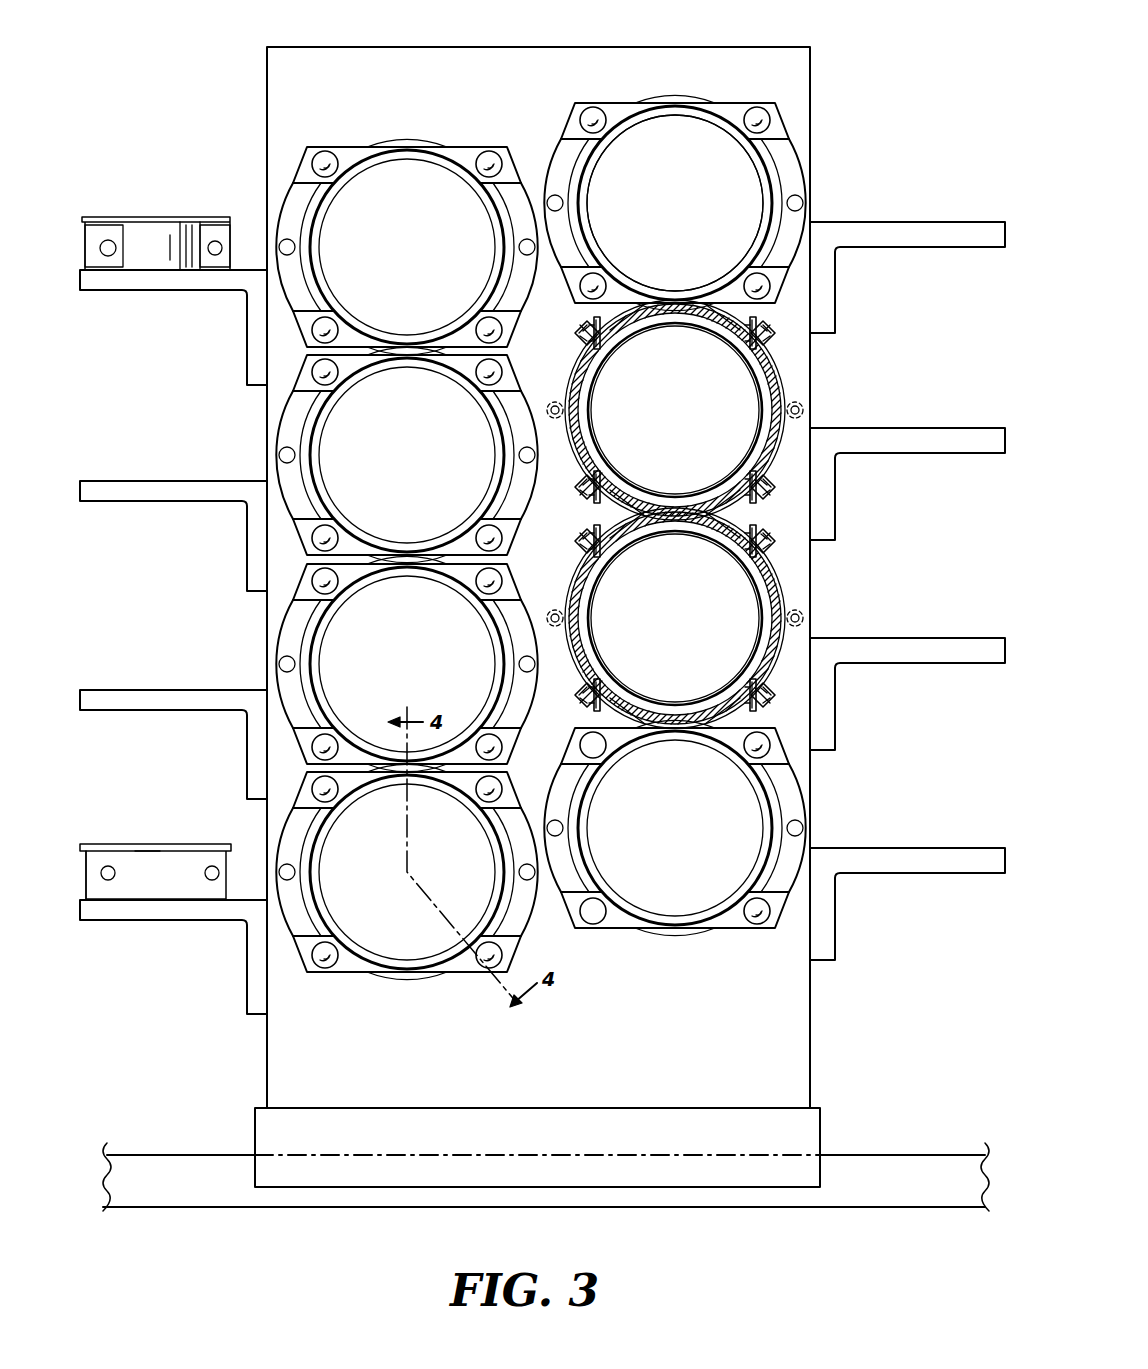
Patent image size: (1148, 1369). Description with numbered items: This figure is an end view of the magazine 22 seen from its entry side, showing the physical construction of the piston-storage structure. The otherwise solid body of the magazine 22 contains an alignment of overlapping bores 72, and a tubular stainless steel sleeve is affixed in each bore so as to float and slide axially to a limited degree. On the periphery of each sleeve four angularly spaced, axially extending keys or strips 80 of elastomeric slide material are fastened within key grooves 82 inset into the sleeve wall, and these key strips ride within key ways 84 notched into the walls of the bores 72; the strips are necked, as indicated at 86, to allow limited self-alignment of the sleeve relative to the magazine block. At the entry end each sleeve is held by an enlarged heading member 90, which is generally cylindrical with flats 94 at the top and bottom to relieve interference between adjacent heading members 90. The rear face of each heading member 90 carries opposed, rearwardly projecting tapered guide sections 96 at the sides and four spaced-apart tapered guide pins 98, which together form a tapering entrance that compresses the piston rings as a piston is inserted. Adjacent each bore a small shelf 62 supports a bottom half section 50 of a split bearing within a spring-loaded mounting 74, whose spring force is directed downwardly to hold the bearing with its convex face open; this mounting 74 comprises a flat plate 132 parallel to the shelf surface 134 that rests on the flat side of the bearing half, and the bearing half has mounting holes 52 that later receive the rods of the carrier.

The magazine 22 is at (567, 4).
The bottom half section of split bearing 50 is at (176, 226).
The mounting holes 52 is at (120, 246).
The shelf 62 is at (171, 285).
The bores 72 is at (730, 187).
The spring-loaded mounting 74 is at (218, 217).
The keys or strips 80 is at (759, 494).
The key grooves 82 is at (608, 474).
The key ways 84 is at (583, 328).
The necked portion of key strips 86 is at (535, 570).
The heading member 90 is at (624, 122).
The flats 94 is at (797, 805).
The tapered guide sections 96 is at (300, 205).
The tapered guide pins 98 is at (324, 158).
The flat plate 132 is at (111, 217).
The shelf surface 134 is at (913, 222).